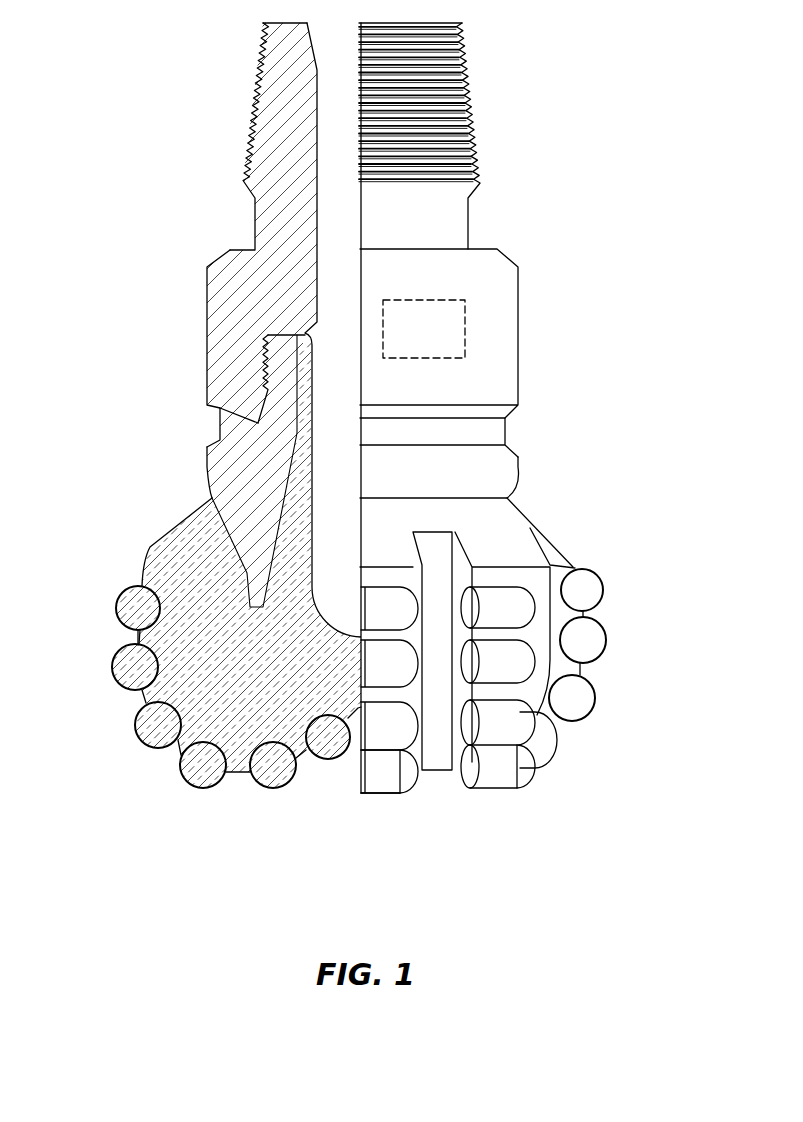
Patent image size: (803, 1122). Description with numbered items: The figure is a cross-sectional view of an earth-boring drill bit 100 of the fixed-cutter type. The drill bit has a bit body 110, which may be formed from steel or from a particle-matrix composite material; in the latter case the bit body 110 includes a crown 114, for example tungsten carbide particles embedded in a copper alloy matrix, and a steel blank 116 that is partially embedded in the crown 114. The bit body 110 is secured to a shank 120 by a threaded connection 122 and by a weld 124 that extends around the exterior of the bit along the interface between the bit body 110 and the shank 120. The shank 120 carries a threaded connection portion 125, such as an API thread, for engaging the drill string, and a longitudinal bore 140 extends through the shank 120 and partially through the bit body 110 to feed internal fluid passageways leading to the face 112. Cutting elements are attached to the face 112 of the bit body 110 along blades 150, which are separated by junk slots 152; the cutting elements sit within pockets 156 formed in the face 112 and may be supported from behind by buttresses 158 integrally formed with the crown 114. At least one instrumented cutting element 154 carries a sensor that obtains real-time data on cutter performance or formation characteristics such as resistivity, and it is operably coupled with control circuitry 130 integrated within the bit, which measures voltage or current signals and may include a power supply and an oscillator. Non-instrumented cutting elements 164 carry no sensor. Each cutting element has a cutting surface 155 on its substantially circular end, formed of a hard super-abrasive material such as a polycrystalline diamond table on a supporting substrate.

The earth-boring drill bit 100 is at (135, 145).
The bit body 110 is at (371, 471).
The face 112 is at (145, 698).
The crown 114 is at (205, 538).
The steel blank 116 is at (228, 478).
The shank 120 is at (225, 327).
The threaded connection 122 is at (265, 358).
The weld 124 is at (240, 405).
The threaded connection portion 125 is at (250, 108).
The control circuitry 130 is at (418, 300).
The longitudinal bore 140 is at (345, 258).
The blades 150 is at (517, 557).
The junk slots 152 is at (433, 774).
The instrumented cutting element 154 is at (140, 742).
The cutting surface 155 is at (468, 775).
The pockets 156 is at (138, 637).
The buttresses 158 is at (413, 775).
The non-instrumented cutting elements 164 is at (120, 598).